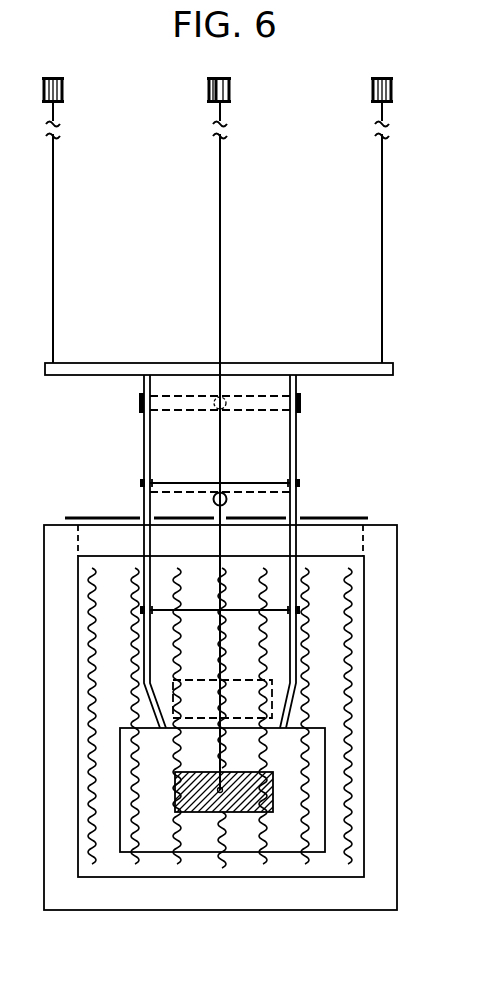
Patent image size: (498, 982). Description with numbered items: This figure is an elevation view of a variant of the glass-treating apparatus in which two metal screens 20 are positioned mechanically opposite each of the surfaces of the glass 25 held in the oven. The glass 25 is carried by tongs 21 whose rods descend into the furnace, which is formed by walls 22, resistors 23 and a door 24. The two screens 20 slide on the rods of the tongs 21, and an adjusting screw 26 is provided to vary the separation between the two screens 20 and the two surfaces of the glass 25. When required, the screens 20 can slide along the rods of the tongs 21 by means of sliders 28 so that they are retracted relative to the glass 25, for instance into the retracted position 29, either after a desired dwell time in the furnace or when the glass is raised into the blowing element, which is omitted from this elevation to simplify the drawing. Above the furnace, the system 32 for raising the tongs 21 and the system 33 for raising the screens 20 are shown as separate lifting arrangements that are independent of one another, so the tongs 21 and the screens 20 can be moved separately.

The screens 20 is at (269, 794).
The tongs 21 is at (297, 444).
The walls 22 is at (389, 618).
The resistors 23 is at (346, 834).
The door 24 is at (318, 516).
The glass 25 is at (325, 746).
The adjusting screw 26 is at (223, 493).
The sliders 28 is at (297, 483).
The retracted position 29 is at (235, 680).
The system for raising the tongs 32 is at (54, 209).
The system for raising the screens 33 is at (221, 209).